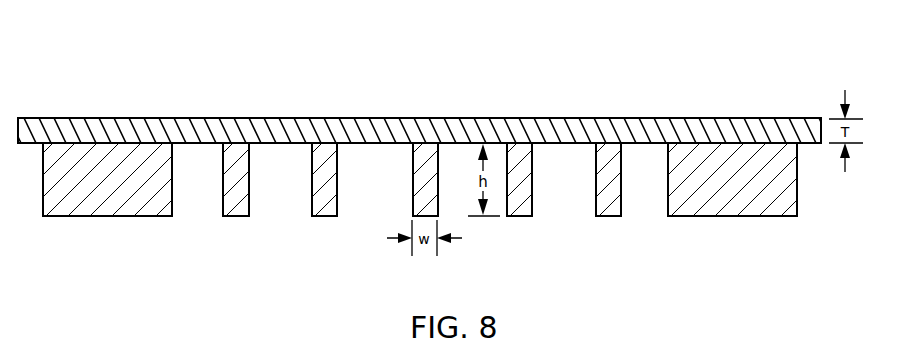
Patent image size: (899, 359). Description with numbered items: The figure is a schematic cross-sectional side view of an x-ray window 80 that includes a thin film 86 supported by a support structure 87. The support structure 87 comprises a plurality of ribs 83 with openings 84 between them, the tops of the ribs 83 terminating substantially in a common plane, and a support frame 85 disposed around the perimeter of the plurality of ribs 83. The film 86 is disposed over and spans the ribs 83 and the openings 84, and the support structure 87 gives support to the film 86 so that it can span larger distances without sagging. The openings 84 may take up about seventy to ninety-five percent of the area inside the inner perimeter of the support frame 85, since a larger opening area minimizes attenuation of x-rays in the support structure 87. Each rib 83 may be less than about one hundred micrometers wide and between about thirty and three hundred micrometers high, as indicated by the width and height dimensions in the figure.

The x-ray window 80 is at (163, 84).
The ribs 83 is at (232, 204).
The openings 84 is at (568, 177).
The support frame 85 is at (68, 202).
The film 86 is at (593, 140).
The support structure 87 is at (822, 192).